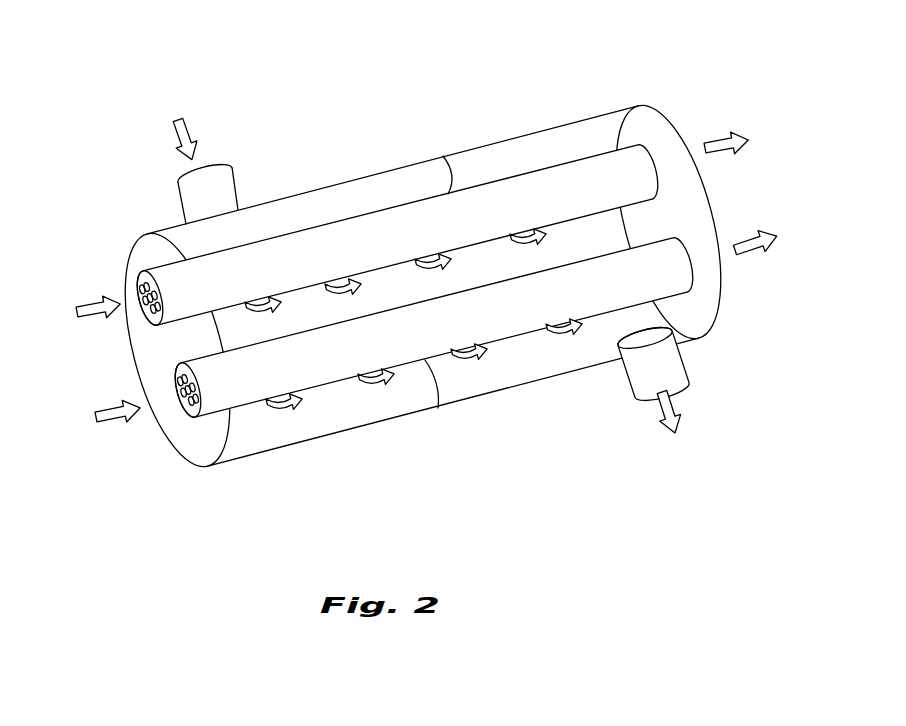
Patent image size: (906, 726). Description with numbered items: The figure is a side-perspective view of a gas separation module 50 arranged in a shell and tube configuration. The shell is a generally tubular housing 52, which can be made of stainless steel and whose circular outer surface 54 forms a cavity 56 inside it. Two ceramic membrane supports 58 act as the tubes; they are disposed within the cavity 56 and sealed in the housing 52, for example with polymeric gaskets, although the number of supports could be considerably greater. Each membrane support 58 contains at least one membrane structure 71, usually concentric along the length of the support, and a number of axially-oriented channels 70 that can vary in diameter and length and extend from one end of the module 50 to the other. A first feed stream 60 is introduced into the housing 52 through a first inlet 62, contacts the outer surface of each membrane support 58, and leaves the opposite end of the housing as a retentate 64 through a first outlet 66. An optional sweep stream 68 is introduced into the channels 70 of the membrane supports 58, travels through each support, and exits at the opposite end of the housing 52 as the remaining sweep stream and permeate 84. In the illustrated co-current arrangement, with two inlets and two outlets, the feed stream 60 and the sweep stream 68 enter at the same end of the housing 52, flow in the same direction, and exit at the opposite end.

The gas separation module 50 is at (424, 245).
The housing 52 is at (423, 286).
The outer surface 54 is at (378, 172).
The cavity 56 is at (228, 246).
The ceramic membrane support 58 is at (444, 157).
The first feed stream 60 is at (173, 128).
The retentate 64 is at (660, 410).
The first inlet 62 is at (185, 197).
The first outlet 66 is at (632, 365).
The sweep stream 68 is at (82, 305).
The channels 70 is at (392, 300).
The membrane structure 71 is at (145, 281).
The remaining sweep stream and permeate 84 is at (730, 156).